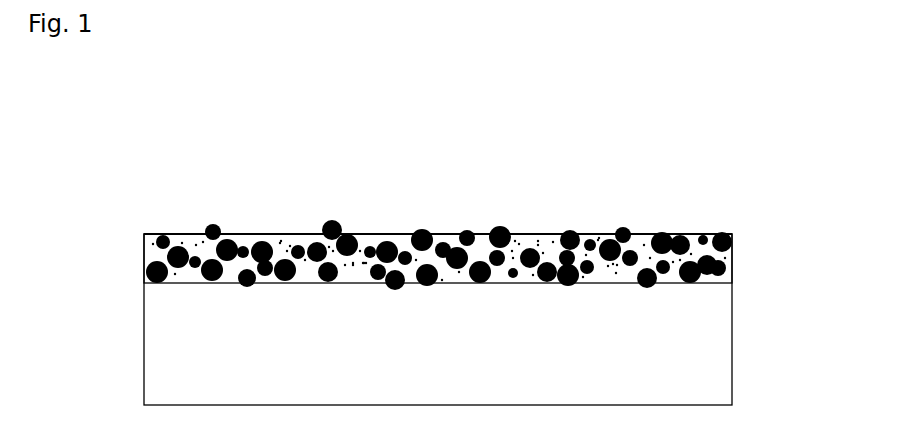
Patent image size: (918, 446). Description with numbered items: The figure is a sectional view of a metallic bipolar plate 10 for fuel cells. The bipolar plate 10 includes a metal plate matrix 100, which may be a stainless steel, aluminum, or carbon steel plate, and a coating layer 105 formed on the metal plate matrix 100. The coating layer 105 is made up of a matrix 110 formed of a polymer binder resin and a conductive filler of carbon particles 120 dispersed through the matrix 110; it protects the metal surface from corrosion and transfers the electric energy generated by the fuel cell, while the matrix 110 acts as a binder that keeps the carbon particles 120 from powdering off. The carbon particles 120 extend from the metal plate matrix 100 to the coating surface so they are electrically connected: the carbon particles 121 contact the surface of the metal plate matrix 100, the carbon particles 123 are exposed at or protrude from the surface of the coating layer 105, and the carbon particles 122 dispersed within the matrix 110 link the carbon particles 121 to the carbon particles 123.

The bipolar plate 10 is at (757, 183).
The metal plate matrix 100 is at (698, 363).
The coating layer 105 is at (745, 235).
The matrix 110 is at (712, 237).
The carbon particles 120 is at (52, 212).
The carbon particles contacting the metal plate matrix 121 is at (146, 282).
The carbon particles dispersed in the matrix 122 is at (146, 252).
The carbon particles exposed on the coating layer surface 123 is at (158, 234).